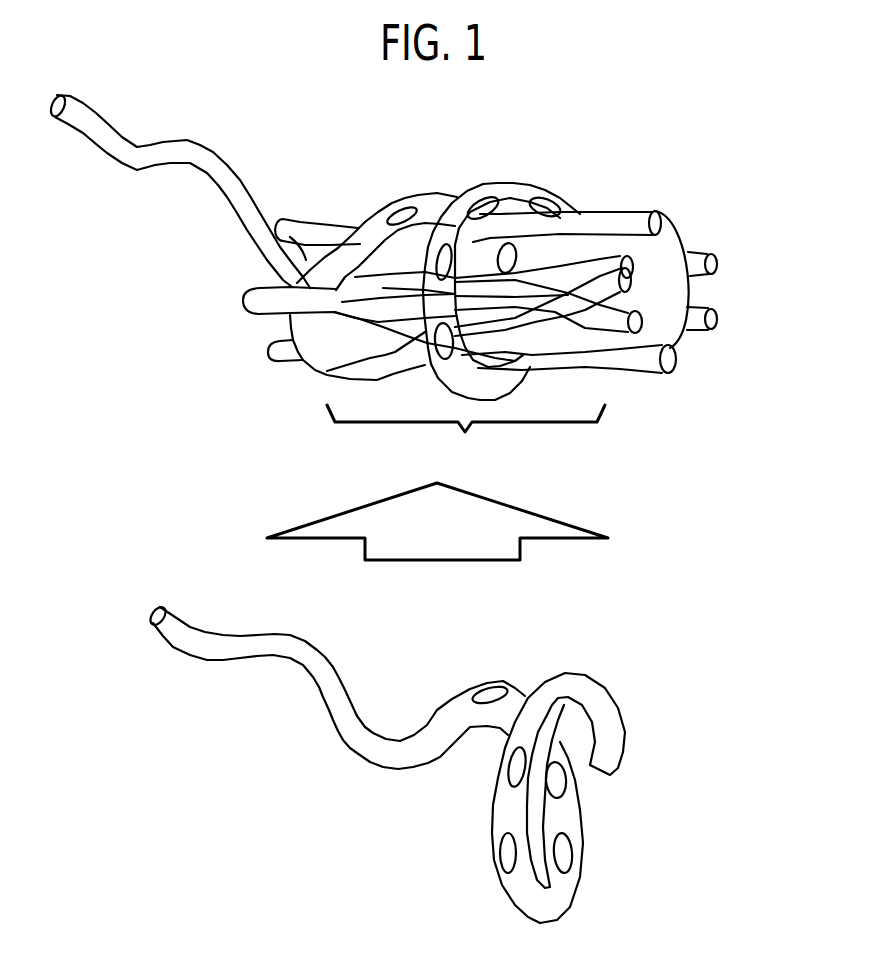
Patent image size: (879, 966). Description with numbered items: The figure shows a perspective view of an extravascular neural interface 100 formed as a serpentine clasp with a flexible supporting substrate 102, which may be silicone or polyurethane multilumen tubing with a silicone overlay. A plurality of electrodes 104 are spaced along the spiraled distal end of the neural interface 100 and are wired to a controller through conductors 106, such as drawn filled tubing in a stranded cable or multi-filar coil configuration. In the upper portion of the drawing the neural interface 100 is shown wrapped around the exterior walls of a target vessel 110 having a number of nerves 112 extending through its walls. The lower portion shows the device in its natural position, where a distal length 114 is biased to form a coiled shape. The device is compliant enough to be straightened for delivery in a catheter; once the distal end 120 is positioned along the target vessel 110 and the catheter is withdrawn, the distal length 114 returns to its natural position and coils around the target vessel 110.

The neural interface 100 is at (284, 88).
The supporting substrate 102 is at (308, 270).
The electrodes 104 is at (513, 767).
The conductors 106 is at (112, 135).
The target vessel 110 is at (630, 210).
The nerves 112 is at (709, 262).
The distal length 114 is at (466, 440).
The distal end 120 is at (593, 773).